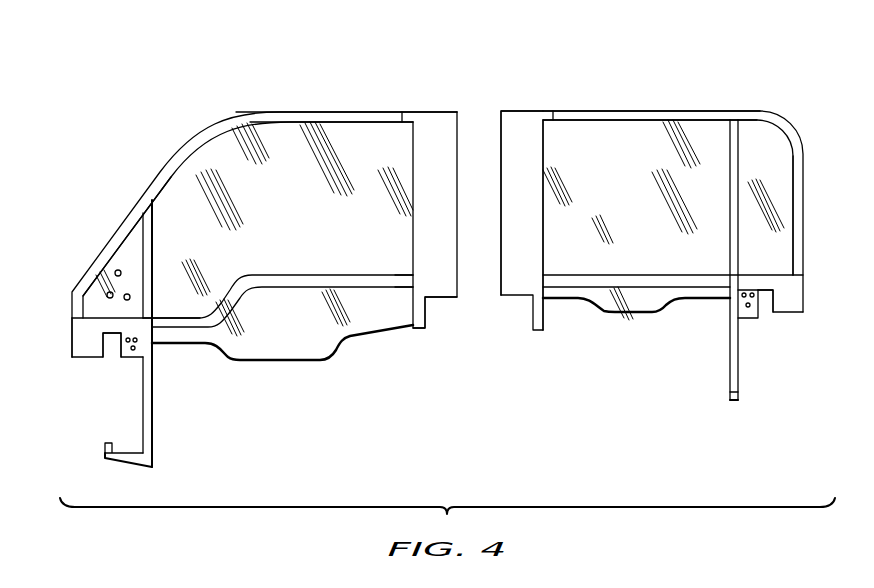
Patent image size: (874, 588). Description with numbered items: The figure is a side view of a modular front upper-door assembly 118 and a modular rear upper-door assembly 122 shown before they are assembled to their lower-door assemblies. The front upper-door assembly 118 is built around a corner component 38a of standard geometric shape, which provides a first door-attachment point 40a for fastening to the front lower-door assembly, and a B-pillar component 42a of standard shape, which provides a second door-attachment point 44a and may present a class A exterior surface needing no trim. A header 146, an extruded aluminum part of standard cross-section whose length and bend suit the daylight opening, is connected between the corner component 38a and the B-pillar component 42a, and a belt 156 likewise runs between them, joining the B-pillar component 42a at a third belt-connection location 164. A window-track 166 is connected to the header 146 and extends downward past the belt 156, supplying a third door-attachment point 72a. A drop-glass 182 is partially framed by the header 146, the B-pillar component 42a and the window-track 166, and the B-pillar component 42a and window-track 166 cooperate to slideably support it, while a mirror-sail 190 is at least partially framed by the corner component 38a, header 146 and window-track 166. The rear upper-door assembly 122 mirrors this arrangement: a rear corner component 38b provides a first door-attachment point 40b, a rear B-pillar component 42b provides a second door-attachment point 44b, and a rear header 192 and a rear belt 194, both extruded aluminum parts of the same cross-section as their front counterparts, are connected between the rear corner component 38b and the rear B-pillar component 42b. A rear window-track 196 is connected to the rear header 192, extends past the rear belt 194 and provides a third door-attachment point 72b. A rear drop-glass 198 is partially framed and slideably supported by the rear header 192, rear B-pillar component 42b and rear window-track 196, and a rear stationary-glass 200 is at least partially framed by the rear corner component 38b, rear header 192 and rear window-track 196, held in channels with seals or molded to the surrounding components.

The modular front upper-door assembly 118 is at (186, 107).
The modular rear upper-door assembly 122 is at (791, 102).
The header 146 is at (296, 112).
The B-pillar component 42a is at (436, 111).
The rear B-pillar component 42b is at (528, 111).
The second door-attachment point 44a is at (432, 332).
The second door-attachment point 44b is at (545, 333).
The mirror-sail 190 is at (124, 250).
The corner component 38a is at (76, 325).
The rear corner component 38b is at (803, 293).
The first door-attachment point 40a is at (85, 340).
The first door-attachment point 40b is at (787, 306).
The third door-attachment point 72a is at (103, 447).
The third door-attachment point 72b is at (732, 400).
The window-track 166 is at (150, 398).
The belt 156 is at (304, 282).
The third belt-connection location 164 is at (413, 282).
The drop-glass 182 is at (317, 221).
The rear header 192 is at (645, 112).
The rear belt 194 is at (652, 275).
The rear window-track 196 is at (740, 378).
The rear drop-glass 198 is at (653, 216).
The rear stationary-glass 200 is at (783, 171).